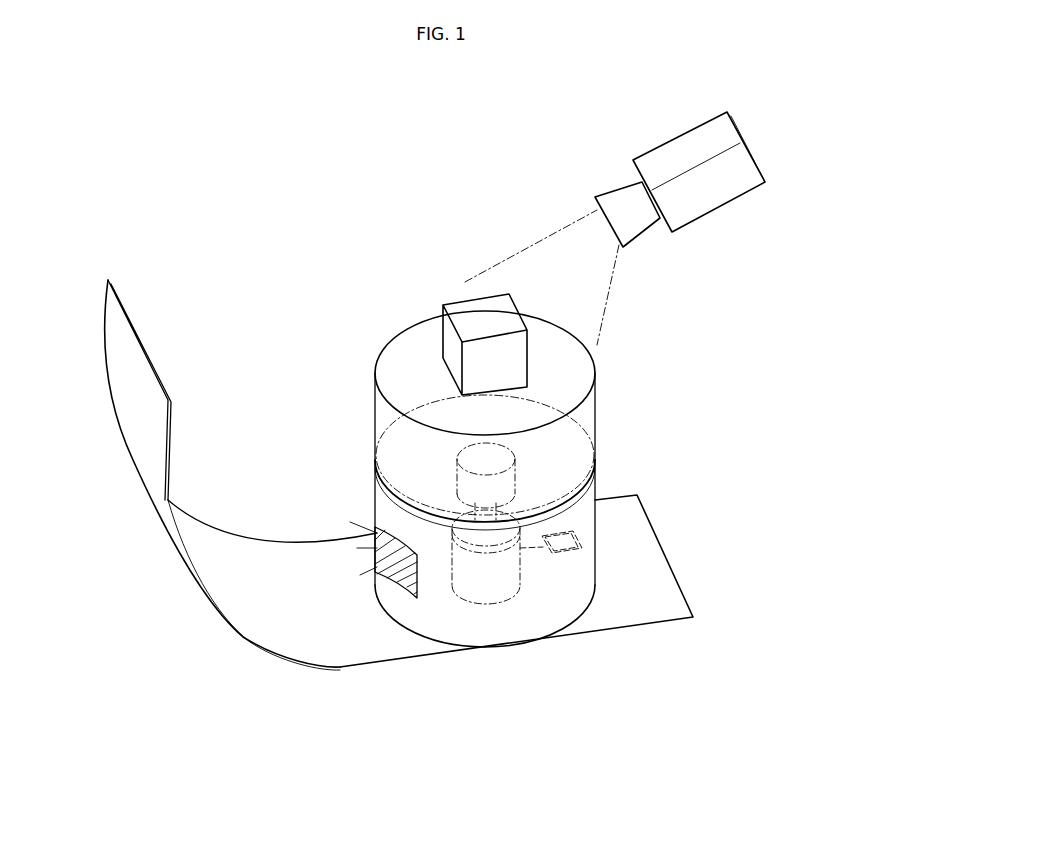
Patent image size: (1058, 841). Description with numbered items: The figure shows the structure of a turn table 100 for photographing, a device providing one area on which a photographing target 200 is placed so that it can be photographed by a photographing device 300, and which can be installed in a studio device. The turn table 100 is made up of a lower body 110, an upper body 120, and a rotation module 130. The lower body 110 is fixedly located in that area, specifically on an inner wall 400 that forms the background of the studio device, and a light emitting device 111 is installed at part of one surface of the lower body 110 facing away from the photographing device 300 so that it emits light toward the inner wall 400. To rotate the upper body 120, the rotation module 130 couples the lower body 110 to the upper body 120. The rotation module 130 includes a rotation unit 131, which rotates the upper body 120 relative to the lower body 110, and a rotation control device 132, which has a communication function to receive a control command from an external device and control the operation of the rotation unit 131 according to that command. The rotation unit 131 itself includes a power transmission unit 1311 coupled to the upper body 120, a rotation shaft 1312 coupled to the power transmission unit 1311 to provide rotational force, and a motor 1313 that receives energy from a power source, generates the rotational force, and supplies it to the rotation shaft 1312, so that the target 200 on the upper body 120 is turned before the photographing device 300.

The turn table 100 is at (400, 365).
The lower body 110 is at (592, 518).
The light emitting device 111 is at (383, 563).
The upper body 120 is at (597, 403).
The rotation module 130 is at (447, 750).
The rotation unit 131 is at (545, 708).
The power transmission unit 1311 is at (462, 487).
The rotation shaft 1312 is at (488, 508).
The motor 1313 is at (502, 585).
The rotation control device 132 is at (568, 552).
The photographing target 200 is at (460, 310).
The photographing device 300 is at (705, 205).
The inner wall 400 is at (160, 380).